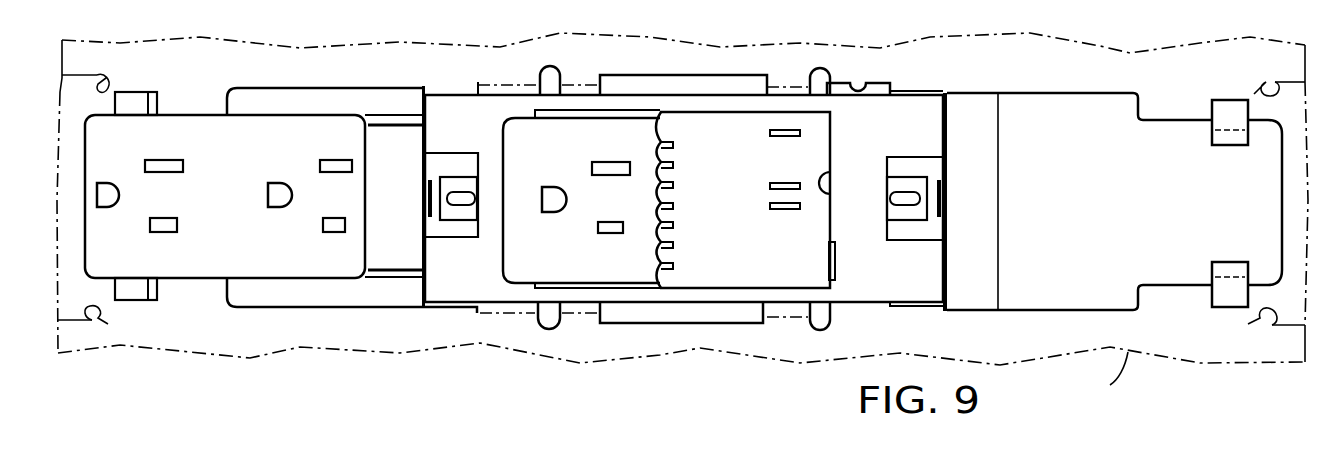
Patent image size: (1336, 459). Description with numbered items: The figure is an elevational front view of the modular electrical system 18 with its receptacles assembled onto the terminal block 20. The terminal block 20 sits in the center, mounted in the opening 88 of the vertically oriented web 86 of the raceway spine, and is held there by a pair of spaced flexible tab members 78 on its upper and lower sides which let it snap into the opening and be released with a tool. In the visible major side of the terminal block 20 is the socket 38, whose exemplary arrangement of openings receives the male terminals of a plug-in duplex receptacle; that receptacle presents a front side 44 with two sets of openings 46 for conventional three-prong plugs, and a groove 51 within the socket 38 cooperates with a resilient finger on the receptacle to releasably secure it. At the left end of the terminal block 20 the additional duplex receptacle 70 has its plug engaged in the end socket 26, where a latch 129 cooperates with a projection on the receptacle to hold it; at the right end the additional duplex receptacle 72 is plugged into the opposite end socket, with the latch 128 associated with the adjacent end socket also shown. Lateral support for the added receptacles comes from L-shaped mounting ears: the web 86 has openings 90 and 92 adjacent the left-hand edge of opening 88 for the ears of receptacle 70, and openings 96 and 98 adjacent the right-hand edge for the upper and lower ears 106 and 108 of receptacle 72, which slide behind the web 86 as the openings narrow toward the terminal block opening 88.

The modular electrical system 18 is at (312, 385).
The terminal block 20 is at (468, 285).
The first socket 26 is at (442, 275).
The socket 38 is at (764, 200).
The front side 44 is at (556, 198).
The openings 46 is at (612, 160).
The groove 51 is at (828, 262).
The duplex receptacle 70 is at (190, 258).
The duplex receptacle 72 is at (1052, 251).
The flexible tab members 78 is at (638, 75).
The web 86 is at (1106, 377).
The opening 88 is at (860, 88).
The opening 90 is at (108, 82).
The opening 92 is at (100, 312).
The opening 96 is at (1272, 82).
The opening 98 is at (1262, 312).
The upper L-shaped mounting ear 106 is at (1210, 112).
The lower L-shaped mounting ear 108 is at (1210, 272).
The latch 128 is at (945, 205).
The latch 129 is at (423, 203).